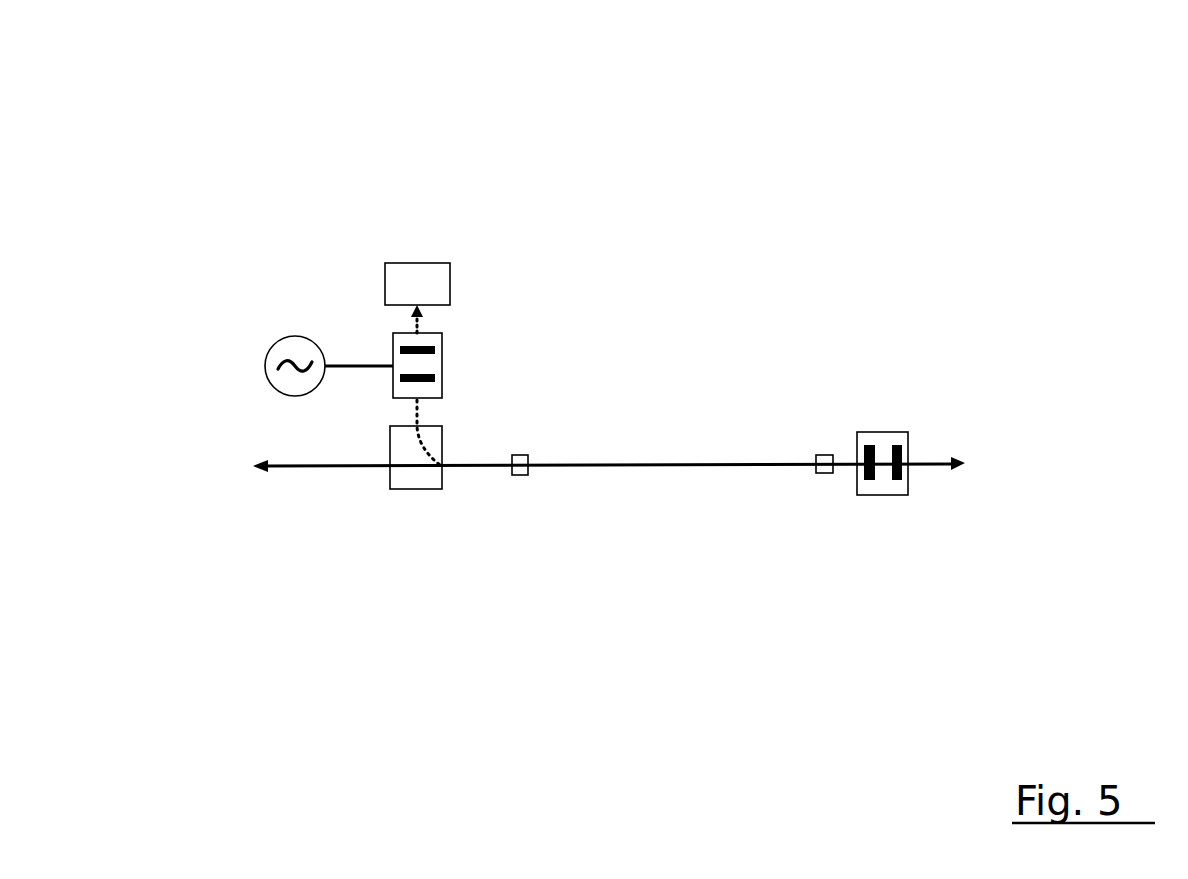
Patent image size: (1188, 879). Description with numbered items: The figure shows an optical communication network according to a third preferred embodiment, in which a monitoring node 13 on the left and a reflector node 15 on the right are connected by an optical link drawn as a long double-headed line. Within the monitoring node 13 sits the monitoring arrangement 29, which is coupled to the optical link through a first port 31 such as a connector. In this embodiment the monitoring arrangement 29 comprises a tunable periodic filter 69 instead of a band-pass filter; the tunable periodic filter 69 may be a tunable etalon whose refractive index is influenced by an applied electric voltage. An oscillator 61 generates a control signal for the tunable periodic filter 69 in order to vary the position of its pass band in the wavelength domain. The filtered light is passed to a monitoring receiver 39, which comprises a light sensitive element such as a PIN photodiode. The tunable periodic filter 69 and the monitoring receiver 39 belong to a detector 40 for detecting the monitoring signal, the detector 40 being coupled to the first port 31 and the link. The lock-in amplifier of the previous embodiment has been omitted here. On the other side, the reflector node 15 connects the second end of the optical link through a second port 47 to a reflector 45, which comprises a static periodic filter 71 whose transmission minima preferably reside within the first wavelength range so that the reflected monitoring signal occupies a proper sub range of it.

The monitoring arrangement 29 is at (308, 106).
The monitoring node 13 is at (455, 563).
The reflector node 15 is at (952, 570).
The first port 31 is at (517, 453).
The monitoring receiver 39 is at (417, 266).
The detector 40 is at (548, 228).
The reflector 45 is at (900, 387).
The second port 47 is at (817, 455).
The oscillator 61 is at (297, 347).
The tunable periodic filter 69 is at (438, 350).
The static periodic filter 71 is at (887, 440).